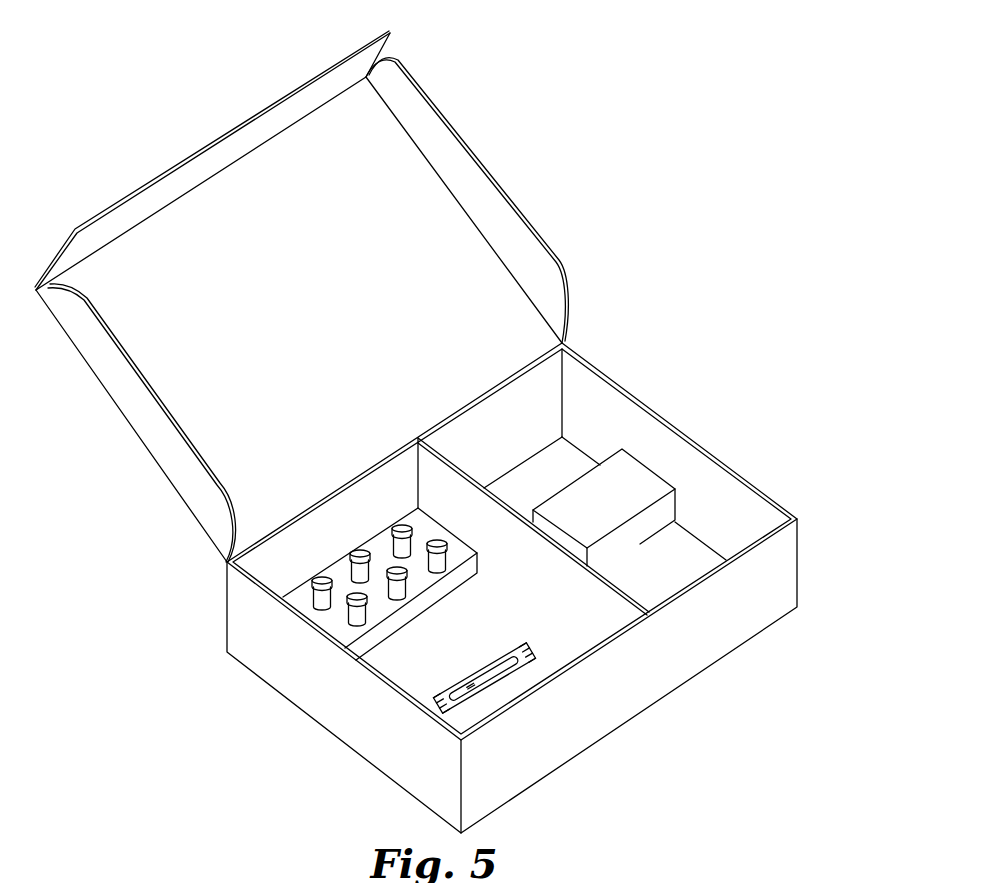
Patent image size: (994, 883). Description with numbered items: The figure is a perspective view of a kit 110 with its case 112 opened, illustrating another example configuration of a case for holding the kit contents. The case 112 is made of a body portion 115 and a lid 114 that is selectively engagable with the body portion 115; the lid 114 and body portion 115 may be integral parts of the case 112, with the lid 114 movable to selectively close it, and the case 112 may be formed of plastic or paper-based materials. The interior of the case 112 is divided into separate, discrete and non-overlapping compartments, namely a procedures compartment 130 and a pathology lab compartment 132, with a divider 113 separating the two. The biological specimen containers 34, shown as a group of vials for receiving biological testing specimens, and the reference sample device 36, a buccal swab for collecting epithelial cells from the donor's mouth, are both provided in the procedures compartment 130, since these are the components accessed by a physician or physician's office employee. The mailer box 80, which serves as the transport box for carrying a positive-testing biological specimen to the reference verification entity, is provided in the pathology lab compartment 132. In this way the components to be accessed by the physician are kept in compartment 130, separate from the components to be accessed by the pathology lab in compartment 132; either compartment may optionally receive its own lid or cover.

The kit 110 is at (416, 432).
The case 112 is at (416, 432).
The lid 114 is at (447, 117).
The body portion 115 is at (680, 432).
The divider 113 is at (458, 467).
The procedures compartment 130 is at (413, 663).
The pathology lab compartment 132 is at (571, 455).
The mailer box 80 is at (633, 488).
The biological specimen containers 34 is at (312, 594).
The reference sample device 36 is at (482, 680).